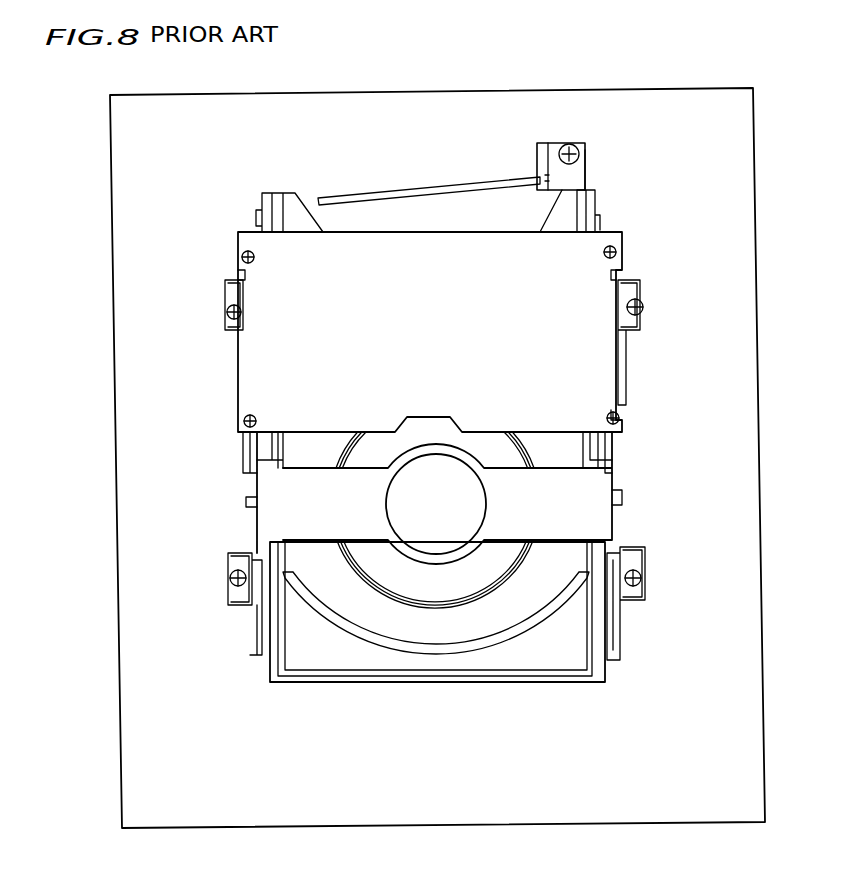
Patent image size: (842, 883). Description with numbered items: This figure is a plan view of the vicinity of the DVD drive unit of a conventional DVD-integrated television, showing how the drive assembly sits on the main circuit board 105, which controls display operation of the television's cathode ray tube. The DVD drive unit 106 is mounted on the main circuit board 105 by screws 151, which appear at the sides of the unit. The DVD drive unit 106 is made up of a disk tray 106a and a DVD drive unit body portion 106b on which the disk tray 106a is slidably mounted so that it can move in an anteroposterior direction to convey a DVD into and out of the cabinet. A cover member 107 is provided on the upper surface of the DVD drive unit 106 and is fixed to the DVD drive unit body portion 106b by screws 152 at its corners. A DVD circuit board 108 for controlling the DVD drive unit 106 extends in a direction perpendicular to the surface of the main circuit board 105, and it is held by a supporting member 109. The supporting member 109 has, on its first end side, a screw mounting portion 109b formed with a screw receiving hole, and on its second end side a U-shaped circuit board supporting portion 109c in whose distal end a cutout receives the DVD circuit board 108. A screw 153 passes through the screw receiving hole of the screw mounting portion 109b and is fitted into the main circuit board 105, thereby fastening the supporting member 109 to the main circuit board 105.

The main circuit board 105 is at (700, 130).
The DVD drive unit 106 is at (555, 648).
The disk tray 106a is at (582, 607).
The DVD drive unit body portion 106b is at (590, 525).
The cover member 107 is at (572, 366).
The DVD circuit board 108 is at (375, 193).
The supporting member 109 is at (560, 142).
The screw mounting portion 109b is at (587, 176).
The U-shaped circuit board supporting portion 109c is at (540, 145).
The screws 151 is at (226, 312).
The screws 152 is at (242, 255).
The screw 153 is at (578, 143).